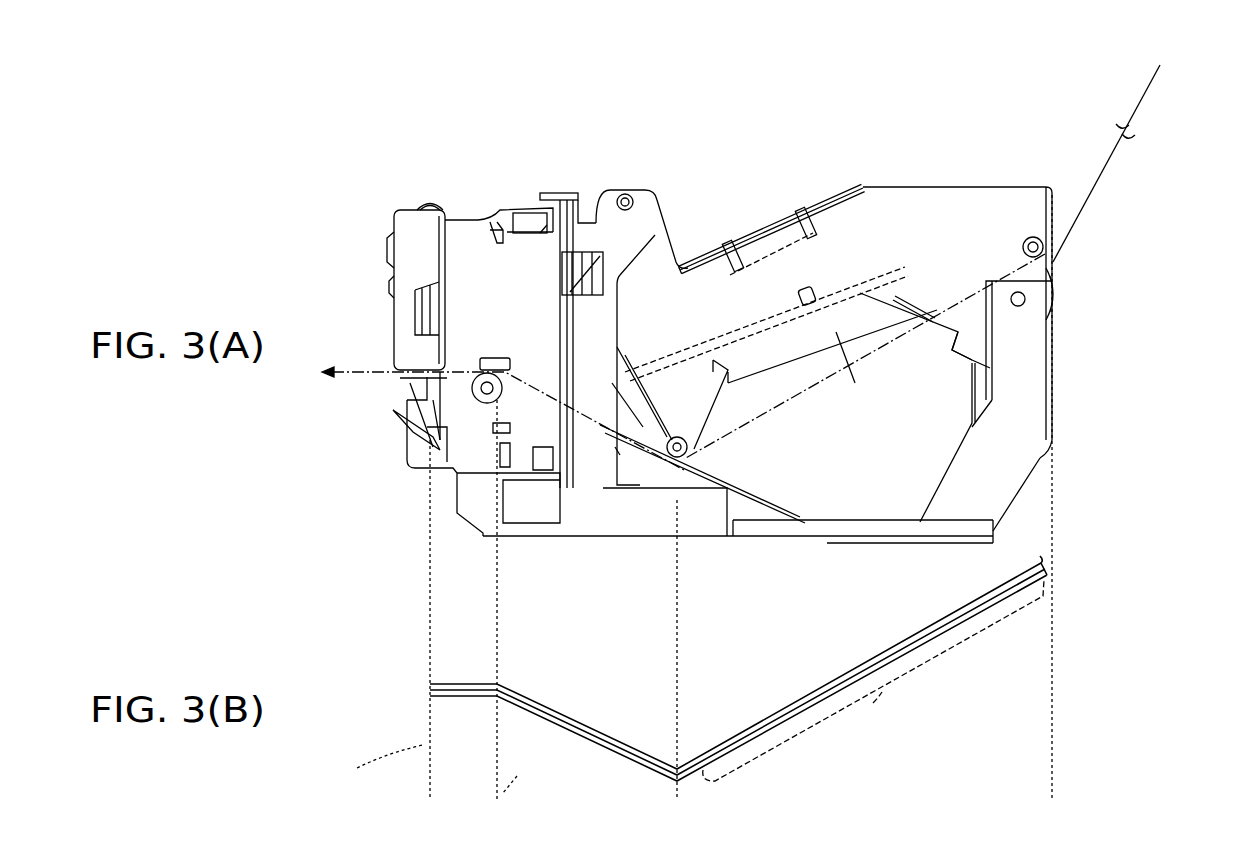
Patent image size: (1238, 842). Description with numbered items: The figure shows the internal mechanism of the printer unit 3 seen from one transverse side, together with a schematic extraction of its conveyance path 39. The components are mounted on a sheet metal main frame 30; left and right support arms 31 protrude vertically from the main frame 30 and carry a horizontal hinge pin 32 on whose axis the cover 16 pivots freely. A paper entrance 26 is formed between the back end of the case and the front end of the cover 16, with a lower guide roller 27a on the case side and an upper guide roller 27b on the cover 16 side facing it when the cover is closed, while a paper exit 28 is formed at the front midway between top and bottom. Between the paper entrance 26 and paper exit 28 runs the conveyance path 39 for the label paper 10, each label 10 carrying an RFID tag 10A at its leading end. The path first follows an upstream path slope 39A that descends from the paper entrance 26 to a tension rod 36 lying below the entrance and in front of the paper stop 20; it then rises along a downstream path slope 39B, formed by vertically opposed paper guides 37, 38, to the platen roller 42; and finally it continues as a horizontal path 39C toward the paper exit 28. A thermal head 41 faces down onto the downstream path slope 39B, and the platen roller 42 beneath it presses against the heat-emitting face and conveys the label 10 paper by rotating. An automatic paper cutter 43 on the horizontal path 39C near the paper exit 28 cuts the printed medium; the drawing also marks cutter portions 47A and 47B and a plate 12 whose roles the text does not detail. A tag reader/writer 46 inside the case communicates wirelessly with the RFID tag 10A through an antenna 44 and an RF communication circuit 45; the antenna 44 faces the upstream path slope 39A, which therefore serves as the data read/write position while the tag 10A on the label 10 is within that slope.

The printer unit 3 is at (858, 136).
The label paper 10 is at (1158, 121).
In FIG. 3B, the label paper 10 is at (553, 711).
In FIG. 3B, the RFID tag 10A is at (850, 674).
The frame plate 12 is at (536, 188).
The cover 16 is at (905, 184).
The paper stop 20 is at (770, 458).
The paper entrance 26 is at (1072, 272).
The lower guide roller 27a is at (1026, 299).
The upper guide roller 27b is at (1037, 184).
The paper exit 28 is at (386, 370).
The main frame 30 is at (689, 547).
The support arms 31 is at (668, 187).
The hinge pin 32 is at (628, 192).
The tension rod 36 is at (675, 459).
The paper guide 37 is at (603, 432).
The paper guide 38 is at (648, 452).
The conveyance path 39 is at (834, 345).
The upstream path slope 39A is at (920, 337).
In FIG. 3B, the upstream path slope 39A is at (947, 633).
The downstream path slope 39B is at (615, 447).
In FIG. 3B, the downstream path slope 39B is at (599, 745).
The horizontal path 39C is at (433, 402).
In FIG. 3B, the horizontal path 39C is at (467, 700).
The thermal head 41 is at (480, 356).
The platen roller 42 is at (480, 402).
The automatic paper cutter 43 is at (388, 314).
The antenna 44 is at (834, 345).
The RF communication circuit 45 is at (790, 222).
The tag reader/writer 46 is at (752, 236).
The upper cutter 47A is at (417, 203).
The lower cutter 47B is at (392, 458).